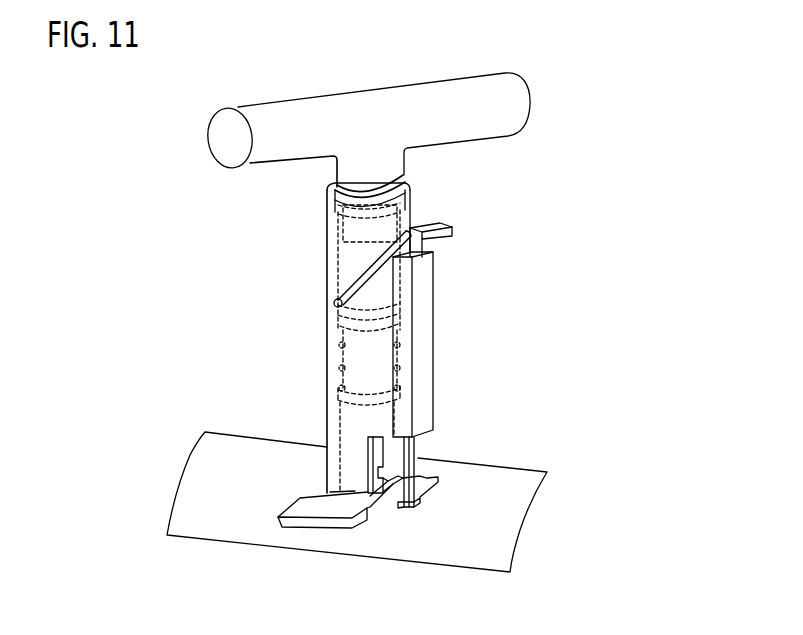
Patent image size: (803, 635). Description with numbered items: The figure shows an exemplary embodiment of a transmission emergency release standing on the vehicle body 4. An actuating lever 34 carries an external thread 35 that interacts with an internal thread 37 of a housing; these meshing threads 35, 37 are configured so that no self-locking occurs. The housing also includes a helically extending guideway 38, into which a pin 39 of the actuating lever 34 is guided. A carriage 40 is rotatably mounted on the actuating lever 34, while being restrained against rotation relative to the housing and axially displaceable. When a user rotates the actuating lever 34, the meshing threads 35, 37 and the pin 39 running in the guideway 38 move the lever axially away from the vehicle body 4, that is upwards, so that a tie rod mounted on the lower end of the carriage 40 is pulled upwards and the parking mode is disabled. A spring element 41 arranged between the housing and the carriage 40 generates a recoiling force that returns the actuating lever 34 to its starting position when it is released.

The vehicle body 4 is at (202, 490).
The actuating lever 34 is at (270, 152).
The external thread 35 is at (403, 177).
The internal thread 37 is at (355, 233).
The guideway 38 is at (352, 277).
The pin 39 is at (333, 303).
The carriage 40 is at (348, 362).
The spring element 41 is at (343, 390).